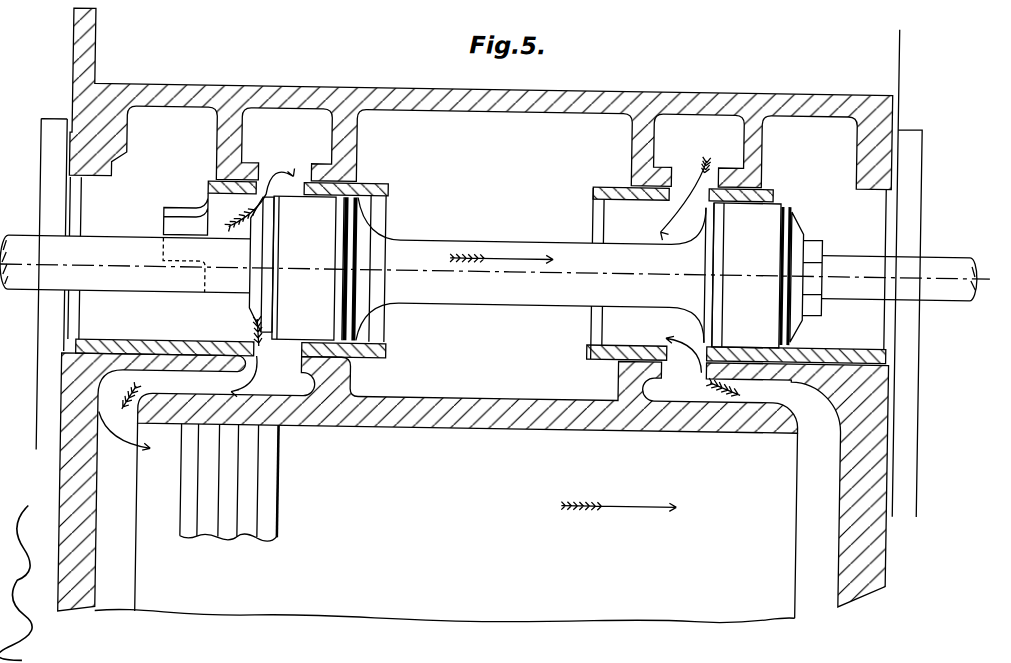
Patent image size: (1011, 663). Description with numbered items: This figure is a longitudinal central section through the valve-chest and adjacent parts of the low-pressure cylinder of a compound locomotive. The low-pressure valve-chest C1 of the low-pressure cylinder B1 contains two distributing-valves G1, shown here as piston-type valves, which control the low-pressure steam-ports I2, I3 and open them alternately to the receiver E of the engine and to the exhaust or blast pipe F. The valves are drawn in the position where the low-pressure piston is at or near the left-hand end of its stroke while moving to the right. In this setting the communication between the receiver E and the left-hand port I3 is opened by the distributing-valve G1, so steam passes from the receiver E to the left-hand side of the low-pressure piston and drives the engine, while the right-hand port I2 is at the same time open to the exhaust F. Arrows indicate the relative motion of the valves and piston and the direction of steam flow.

The low-pressure valve-chest C1 is at (482, 96).
The receiver E is at (490, 165).
The left-hand low-pressure steam-port I3 is at (281, 262).
The right-hand low-pressure steam-port I2 is at (691, 265).
The exhaust or blast pipe F is at (531, 258).
The distributing-valve G1 is at (482, 272).
The low-pressure cylinder B1 is at (473, 490).